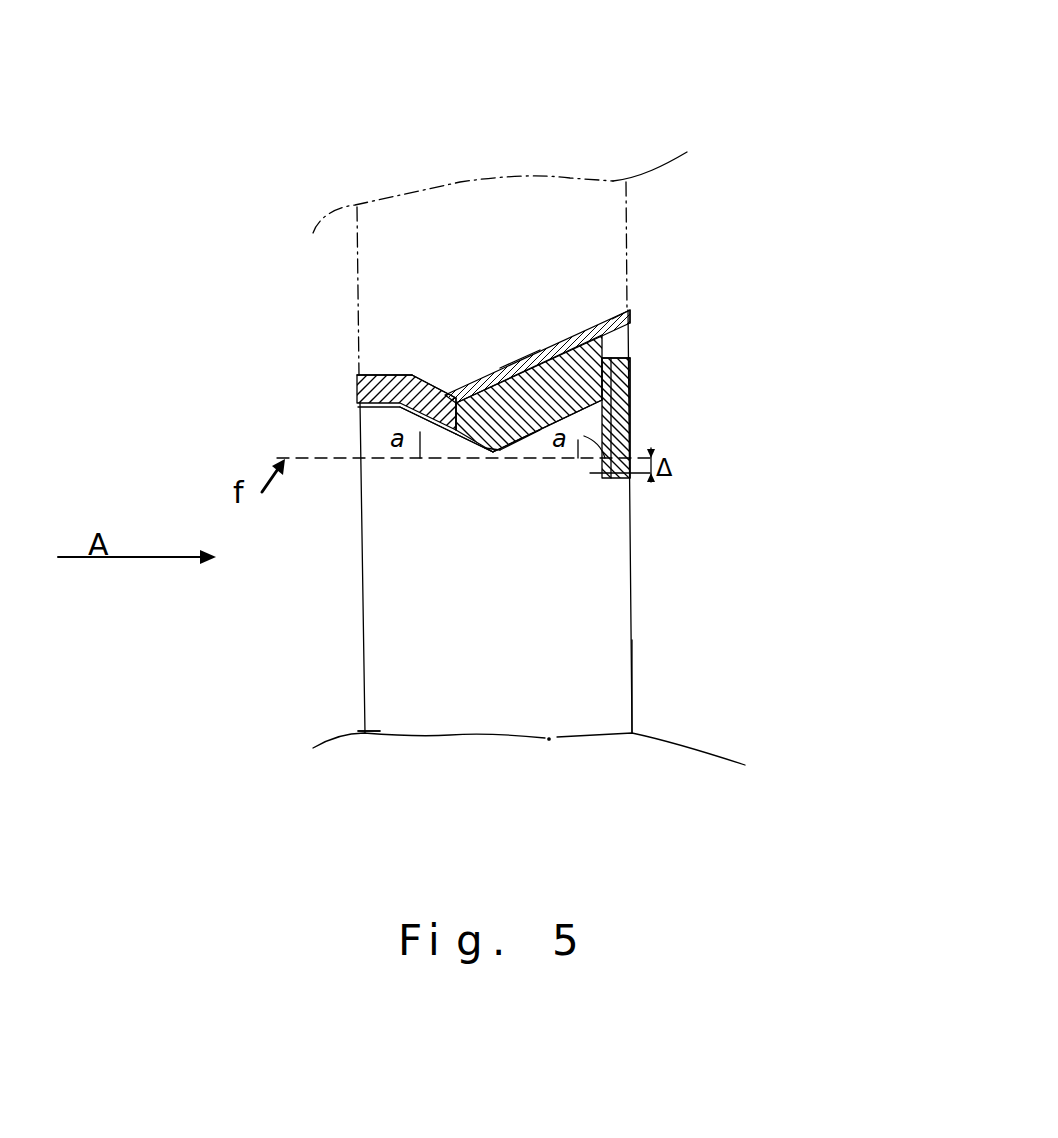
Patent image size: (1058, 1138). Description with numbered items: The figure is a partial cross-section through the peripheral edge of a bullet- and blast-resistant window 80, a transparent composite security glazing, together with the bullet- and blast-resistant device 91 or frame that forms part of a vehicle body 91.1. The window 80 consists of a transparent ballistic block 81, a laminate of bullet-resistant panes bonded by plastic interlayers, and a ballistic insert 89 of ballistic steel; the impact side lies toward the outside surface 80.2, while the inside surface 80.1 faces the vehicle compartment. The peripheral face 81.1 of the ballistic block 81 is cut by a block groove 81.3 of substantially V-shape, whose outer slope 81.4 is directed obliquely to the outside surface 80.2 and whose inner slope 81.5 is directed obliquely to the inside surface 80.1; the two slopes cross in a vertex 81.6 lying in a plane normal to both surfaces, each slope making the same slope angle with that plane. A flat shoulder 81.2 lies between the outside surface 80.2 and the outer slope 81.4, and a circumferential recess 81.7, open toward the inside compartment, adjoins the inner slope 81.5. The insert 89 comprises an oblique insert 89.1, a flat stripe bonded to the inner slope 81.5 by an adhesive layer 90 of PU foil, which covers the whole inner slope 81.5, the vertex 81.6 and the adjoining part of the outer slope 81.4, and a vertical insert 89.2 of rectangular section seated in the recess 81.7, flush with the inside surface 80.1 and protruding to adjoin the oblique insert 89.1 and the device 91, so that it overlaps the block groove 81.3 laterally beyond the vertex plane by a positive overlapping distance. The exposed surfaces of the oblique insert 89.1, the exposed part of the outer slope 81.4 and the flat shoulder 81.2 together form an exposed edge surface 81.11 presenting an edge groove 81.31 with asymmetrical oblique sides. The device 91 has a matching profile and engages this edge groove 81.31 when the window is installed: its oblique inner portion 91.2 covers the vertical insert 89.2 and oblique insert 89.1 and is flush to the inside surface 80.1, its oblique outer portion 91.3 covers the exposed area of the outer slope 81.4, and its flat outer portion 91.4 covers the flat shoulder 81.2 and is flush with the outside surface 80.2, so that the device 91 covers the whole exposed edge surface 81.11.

The bullet- and blast-resistant window 80 is at (588, 716).
The inside surface 80.1 is at (633, 673).
The outside surface 80.2 is at (365, 713).
The ballistic block 81 is at (406, 703).
The peripheral face 81.1 is at (467, 455).
The flat shoulder 81.2 is at (372, 416).
The block groove 81.3 is at (453, 398).
The edge groove 81.31 is at (440, 396).
The exposed edge surface 81.11 is at (519, 390).
The outer slope 81.4 is at (441, 420).
The inner slope 81.5 is at (529, 452).
The vertex 81.6 is at (505, 465).
The recess 81.7 is at (620, 434).
The ballistic insert 89 is at (632, 390).
The oblique insert 89.1 is at (530, 370).
The vertical insert 89.2 is at (632, 358).
The adhesive layer 90 is at (537, 440).
The bullet- and blast-resistant device 91 is at (612, 320).
The vehicle body 91.1 is at (393, 233).
The oblique inner portion 91.2 is at (630, 334).
The oblique outer portion 91.3 is at (437, 373).
The flat outer portion 91.4 is at (358, 372).